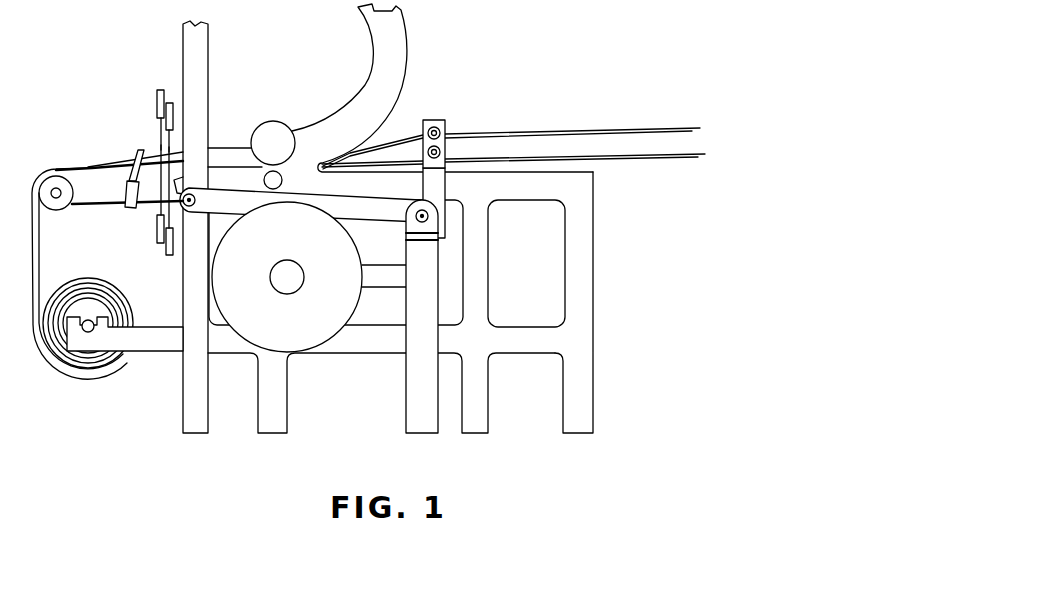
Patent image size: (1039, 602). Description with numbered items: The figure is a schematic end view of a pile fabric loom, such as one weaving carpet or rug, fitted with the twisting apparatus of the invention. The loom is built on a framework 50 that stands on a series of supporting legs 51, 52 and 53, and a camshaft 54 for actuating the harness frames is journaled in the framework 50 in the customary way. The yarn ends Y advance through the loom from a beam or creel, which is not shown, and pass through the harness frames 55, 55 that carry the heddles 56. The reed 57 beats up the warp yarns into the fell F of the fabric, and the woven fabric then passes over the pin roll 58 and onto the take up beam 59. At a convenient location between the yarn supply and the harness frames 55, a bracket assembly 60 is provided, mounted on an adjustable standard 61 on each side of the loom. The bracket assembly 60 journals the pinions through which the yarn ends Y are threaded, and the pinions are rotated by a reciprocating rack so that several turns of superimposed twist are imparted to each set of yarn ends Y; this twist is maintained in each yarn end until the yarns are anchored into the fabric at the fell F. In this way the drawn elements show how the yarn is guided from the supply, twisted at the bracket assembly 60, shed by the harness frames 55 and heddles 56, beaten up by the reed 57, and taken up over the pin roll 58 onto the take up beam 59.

The framework 50 is at (590, 196).
The supporting leg 51 is at (588, 297).
The supporting leg 52 is at (481, 311).
The supporting leg 53 is at (189, 288).
The camshaft 54 is at (316, 336).
The harness frames 55 is at (169, 102).
The heddles 56 is at (160, 147).
The reed 57 is at (119, 192).
The pin roll 58 is at (50, 207).
The take up beam 59 is at (90, 279).
The bracket assembly 60 is at (445, 122).
The adjustable standard 61 is at (443, 183).
The fell F is at (88, 166).
The yarn ends Y is at (647, 128).